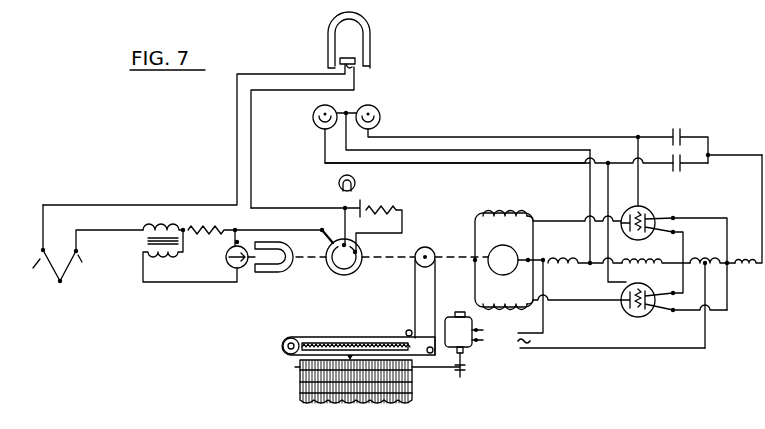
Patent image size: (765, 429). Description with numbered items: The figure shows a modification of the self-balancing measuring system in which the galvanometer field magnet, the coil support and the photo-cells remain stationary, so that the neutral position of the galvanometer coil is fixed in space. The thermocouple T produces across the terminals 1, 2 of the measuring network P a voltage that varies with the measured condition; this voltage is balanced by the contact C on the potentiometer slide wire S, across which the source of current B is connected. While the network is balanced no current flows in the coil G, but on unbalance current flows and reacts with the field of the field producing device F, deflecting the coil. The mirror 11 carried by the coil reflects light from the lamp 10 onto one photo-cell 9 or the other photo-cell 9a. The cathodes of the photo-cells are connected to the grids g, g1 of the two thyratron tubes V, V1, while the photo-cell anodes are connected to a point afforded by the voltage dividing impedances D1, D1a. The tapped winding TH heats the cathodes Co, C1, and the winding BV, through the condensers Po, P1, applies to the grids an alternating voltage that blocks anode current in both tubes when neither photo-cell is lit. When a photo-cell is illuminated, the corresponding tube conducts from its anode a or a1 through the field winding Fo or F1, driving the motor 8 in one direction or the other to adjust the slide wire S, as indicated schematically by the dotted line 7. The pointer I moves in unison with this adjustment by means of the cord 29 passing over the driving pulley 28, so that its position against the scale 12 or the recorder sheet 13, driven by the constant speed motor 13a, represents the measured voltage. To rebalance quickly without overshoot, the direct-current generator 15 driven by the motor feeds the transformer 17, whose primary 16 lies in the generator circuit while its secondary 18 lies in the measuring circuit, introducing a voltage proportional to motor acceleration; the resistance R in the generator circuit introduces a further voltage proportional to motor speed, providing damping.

The terminal 1 is at (29, 274).
The terminal 2 is at (88, 272).
The thermocouple T is at (92, 255).
The transformer 17 is at (148, 240).
The transformer primary winding 18 is at (165, 226).
The primary 16 is at (165, 260).
The direct-current generator 15 is at (236, 270).
The resistance R is at (210, 226).
The measuring network P is at (240, 138).
The field producing device F is at (373, 36).
The coil G is at (357, 62).
The mirror 11 is at (352, 67).
The photo-cell 9 is at (318, 122).
The photo-cell 9a is at (382, 121).
The lamp 10 is at (338, 185).
The source of current B is at (368, 201).
The contact C is at (331, 243).
The slide wire S is at (342, 276).
The dotted line 7 is at (390, 262).
The driving pulley 28 is at (432, 250).
The cord 29 is at (310, 338).
The scale 12 is at (337, 343).
The pointer I is at (362, 352).
The recorder sheet 13 is at (300, 383).
The constant speed motor 13a is at (470, 347).
The field winding Fo is at (507, 213).
The field winding F1 is at (509, 308).
The motor 8 is at (512, 250).
The condenser Po is at (683, 133).
The condenser P1 is at (683, 170).
The tube V is at (650, 212).
The anode a is at (629, 210).
The grid g is at (631, 237).
The cathode Co is at (650, 235).
The tapped winding TH is at (694, 261).
The voltage dividing impedance D1 is at (563, 268).
The voltage dividing impedance D1a is at (642, 268).
The winding BV is at (746, 270).
The tube V1 is at (638, 318).
The anode a1 is at (620, 305).
The grid g1 is at (628, 316).
The cathode C1 is at (650, 314).